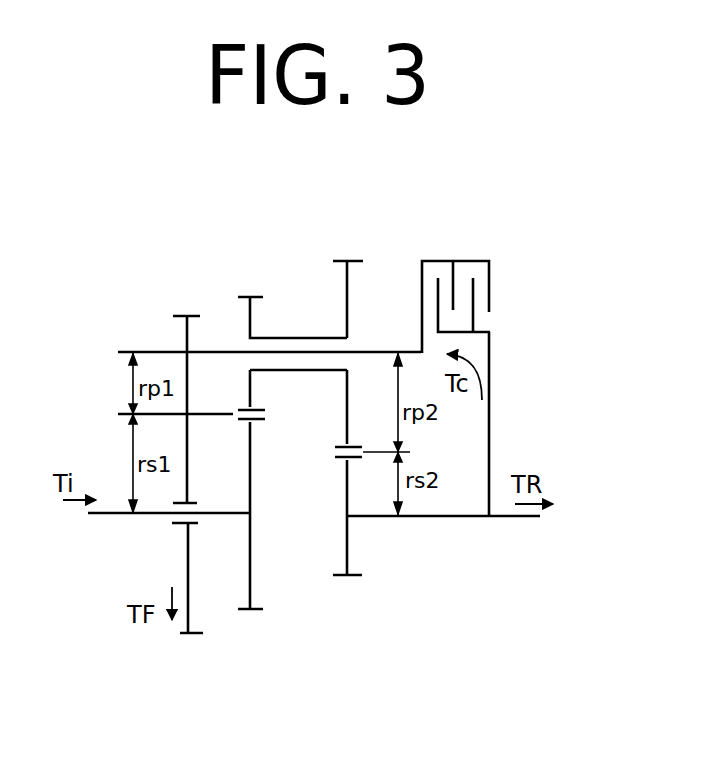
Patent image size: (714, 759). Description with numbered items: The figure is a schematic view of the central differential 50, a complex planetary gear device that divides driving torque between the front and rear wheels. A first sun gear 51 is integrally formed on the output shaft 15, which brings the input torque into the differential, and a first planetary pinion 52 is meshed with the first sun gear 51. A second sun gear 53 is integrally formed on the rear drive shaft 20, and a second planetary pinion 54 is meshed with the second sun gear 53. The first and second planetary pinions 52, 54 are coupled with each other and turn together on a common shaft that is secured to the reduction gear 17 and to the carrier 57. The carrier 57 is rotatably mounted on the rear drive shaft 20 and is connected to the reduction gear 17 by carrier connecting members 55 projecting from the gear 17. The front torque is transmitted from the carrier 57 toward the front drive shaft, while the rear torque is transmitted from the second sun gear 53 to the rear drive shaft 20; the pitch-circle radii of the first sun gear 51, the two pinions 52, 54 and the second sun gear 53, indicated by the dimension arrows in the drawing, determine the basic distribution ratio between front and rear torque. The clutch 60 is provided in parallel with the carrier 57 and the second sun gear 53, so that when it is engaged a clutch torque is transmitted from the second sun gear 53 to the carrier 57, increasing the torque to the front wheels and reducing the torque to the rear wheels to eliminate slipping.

The output shaft 15 is at (118, 515).
The reduction gear 17 is at (186, 336).
The rear drive shaft 20 is at (520, 518).
The central differential 50 is at (297, 255).
The first sun gear 51 is at (283, 476).
The first planetary pinion 52 is at (248, 313).
The second sun gear 53 is at (345, 502).
The second planetary pinion 54 is at (357, 260).
The carrier connecting members 55 is at (377, 350).
The carrier 57 is at (420, 280).
The clutch 60 is at (499, 281).